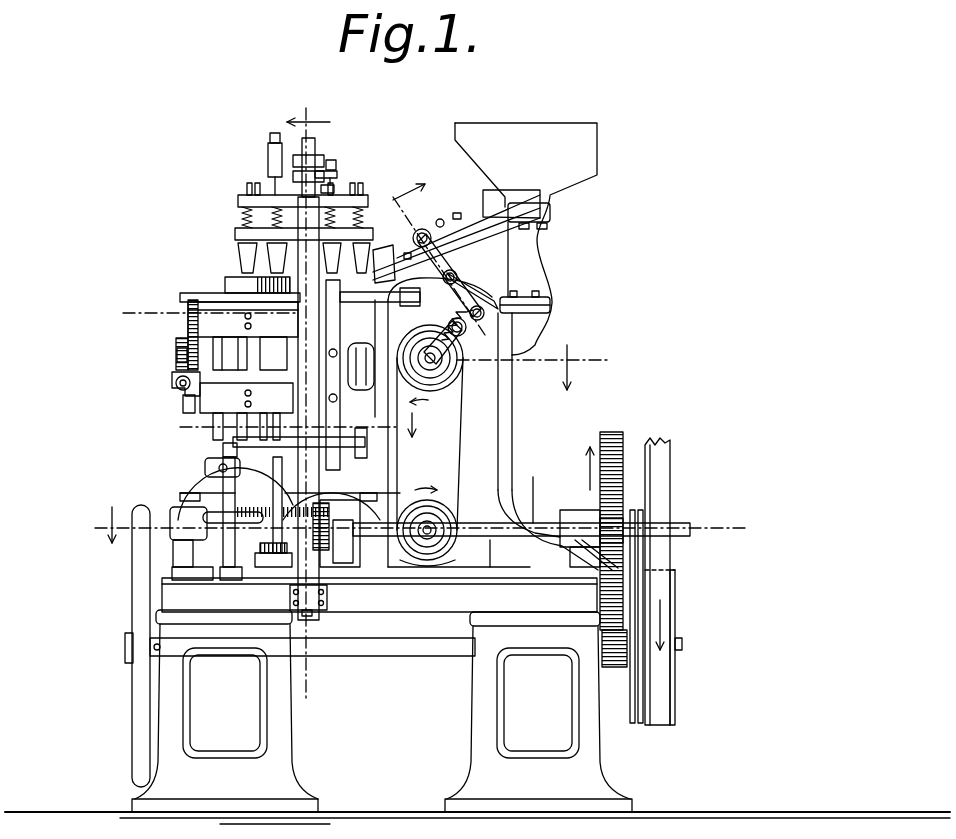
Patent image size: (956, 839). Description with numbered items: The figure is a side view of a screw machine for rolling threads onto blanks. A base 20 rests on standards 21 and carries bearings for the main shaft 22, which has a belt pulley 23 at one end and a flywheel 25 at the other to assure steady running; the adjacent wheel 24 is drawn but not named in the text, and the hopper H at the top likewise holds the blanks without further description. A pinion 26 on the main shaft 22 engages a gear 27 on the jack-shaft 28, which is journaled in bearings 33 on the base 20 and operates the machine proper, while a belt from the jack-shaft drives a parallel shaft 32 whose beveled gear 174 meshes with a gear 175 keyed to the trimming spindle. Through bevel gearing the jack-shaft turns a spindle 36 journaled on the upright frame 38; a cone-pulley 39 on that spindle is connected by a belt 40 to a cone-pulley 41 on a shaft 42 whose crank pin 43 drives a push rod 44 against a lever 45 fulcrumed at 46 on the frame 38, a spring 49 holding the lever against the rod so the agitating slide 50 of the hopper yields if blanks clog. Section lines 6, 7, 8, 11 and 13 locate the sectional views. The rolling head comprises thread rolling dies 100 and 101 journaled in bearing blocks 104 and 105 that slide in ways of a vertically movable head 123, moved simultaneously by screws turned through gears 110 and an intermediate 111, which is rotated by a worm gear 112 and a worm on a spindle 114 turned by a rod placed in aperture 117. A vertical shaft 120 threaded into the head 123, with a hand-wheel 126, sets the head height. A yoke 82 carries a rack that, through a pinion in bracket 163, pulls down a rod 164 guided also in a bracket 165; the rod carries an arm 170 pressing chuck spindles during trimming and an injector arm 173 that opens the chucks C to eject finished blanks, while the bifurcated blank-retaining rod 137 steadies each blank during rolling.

The section line 6 6 is at (308, 405).
The section line 7 7 is at (439, 265).
The section line 8 8 is at (409, 548).
The section line 11 is at (373, 343).
The section line 13 is at (317, 428).
The base 20 is at (379, 595).
The standards 21 is at (283, 770).
The main shaft 22 is at (355, 645).
The pulley 23 is at (675, 707).
The flywheel 24 is at (660, 585).
The flywheel 25 is at (138, 603).
The pinion 26 is at (613, 670).
The gear 27 is at (613, 433).
The jack-shaft 28 is at (532, 520).
The shaft 32 is at (503, 551).
The bearings 33 is at (180, 515).
The spindle 36 is at (443, 513).
The upright frame 38 is at (490, 427).
The cone-pulley 39 is at (443, 551).
The belt 40 is at (446, 444).
The cone-pulley 41 is at (440, 368).
The shaft 42 is at (448, 366).
The crank pin 43 is at (460, 360).
The push rod 44 is at (540, 308).
The lever 45 is at (462, 283).
The fulcrum spindle 46 is at (460, 272).
The spring 49 is at (547, 292).
The agitating slide 50 is at (475, 217).
The yoke 82 is at (365, 447).
The thread rolling die 100 is at (250, 205).
The thread rolling die 101 is at (243, 243).
The bearing block 104 is at (210, 290).
The bearing block 105 is at (230, 280).
The gear 110 is at (222, 447).
The intermediate 111 is at (186, 320).
The worm gear 112 is at (180, 337).
The spindle 114 is at (172, 382).
The aperture 117 is at (176, 386).
The vertical shaft 120 is at (220, 483).
The vertically movable head 123 is at (217, 402).
The hand-wheel 126 is at (203, 513).
The bifurcated blank-retaining rod 137 is at (247, 360).
The bracket 163 is at (317, 613).
The rod 164 is at (309, 143).
The bracket 165 is at (300, 202).
The arm 170 is at (268, 160).
The injector arm 173 is at (337, 172).
The beveled gear 174 is at (277, 560).
The gear 175 is at (273, 527).
The hopper H is at (512, 132).
The chucks C is at (208, 247).